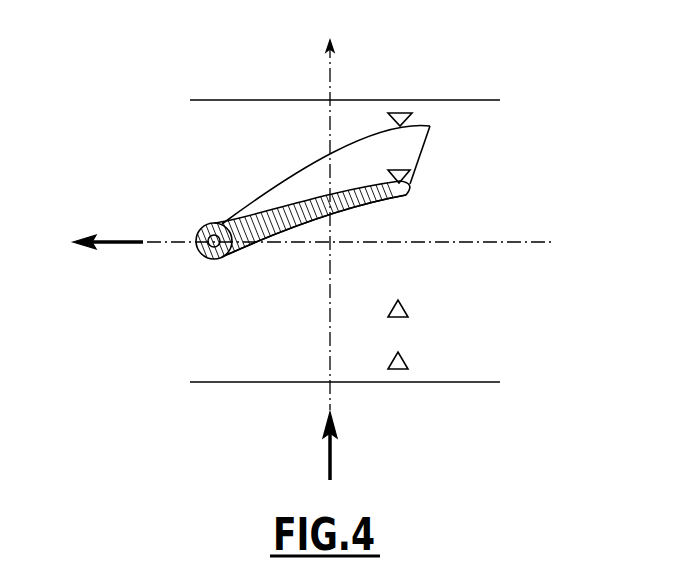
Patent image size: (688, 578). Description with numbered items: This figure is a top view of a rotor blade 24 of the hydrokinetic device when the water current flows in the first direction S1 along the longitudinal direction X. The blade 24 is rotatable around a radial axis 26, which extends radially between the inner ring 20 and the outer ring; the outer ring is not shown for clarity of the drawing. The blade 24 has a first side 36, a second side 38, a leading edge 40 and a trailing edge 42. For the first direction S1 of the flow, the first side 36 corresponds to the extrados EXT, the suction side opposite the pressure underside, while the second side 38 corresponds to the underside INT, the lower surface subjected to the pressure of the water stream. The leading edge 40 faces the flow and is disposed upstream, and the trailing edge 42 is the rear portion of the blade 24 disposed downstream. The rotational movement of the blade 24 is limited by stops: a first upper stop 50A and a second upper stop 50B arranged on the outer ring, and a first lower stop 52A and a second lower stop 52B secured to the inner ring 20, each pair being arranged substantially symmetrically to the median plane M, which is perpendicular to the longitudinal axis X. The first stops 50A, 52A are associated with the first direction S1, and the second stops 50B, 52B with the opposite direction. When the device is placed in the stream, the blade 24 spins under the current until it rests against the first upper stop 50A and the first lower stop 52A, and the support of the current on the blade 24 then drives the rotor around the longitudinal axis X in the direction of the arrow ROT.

The inner ring 20 is at (238, 370).
The blade 24 is at (291, 229).
The radial axis 26 is at (208, 228).
The first side 36 is at (317, 180).
The second side 38 is at (355, 213).
The leading edge 40 is at (198, 250).
The trailing edge 42 is at (432, 138).
The first upper stop 50A is at (412, 175).
The second upper stop 50B is at (410, 308).
The first lower stop 52A is at (413, 119).
The second lower stop 52B is at (410, 360).
The longitudinal direction X is at (333, 56).
The median plane M is at (538, 242).
The first direction of the current S1 is at (333, 448).
The direction of rotation ROT is at (120, 246).
The extrados (suction side) EXT is at (357, 168).
The underside (intrados) INT is at (386, 213).